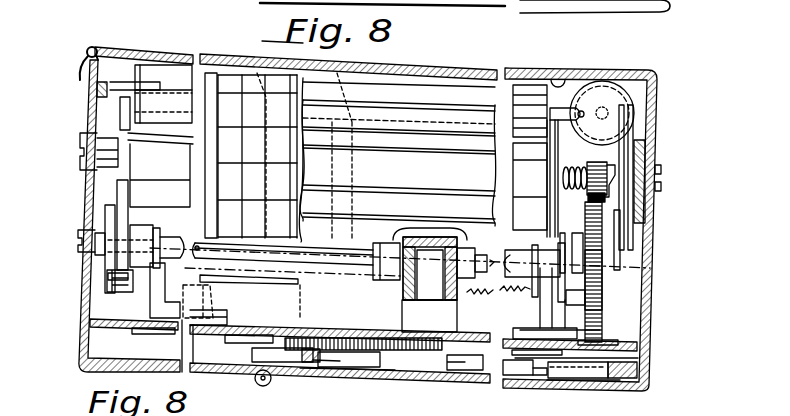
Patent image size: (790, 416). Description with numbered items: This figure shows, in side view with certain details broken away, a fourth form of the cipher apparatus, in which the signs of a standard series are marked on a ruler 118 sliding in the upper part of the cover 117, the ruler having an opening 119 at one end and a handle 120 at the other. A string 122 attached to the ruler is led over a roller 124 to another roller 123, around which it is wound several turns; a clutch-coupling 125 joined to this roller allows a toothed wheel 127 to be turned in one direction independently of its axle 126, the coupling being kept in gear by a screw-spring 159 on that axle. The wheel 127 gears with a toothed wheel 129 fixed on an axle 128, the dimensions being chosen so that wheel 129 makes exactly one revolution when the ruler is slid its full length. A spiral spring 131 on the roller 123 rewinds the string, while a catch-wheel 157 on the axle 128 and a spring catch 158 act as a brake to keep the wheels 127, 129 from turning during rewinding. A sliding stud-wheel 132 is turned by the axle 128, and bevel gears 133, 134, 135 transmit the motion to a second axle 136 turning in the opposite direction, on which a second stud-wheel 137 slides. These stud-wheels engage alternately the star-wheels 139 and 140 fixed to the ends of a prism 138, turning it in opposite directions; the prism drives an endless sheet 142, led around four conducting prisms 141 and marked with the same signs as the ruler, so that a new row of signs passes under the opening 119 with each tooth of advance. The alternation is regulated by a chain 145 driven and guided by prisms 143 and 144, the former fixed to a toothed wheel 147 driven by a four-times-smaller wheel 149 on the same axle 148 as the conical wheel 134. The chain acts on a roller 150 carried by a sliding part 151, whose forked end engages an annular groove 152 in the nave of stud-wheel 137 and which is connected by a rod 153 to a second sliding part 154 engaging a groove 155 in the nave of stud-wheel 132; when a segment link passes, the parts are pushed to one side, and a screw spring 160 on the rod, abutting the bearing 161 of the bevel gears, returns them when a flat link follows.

The cover 117 is at (660, 80).
The ruler 118 is at (403, 70).
The opening 119 is at (580, 78).
The handle 120 is at (85, 58).
The string 122 is at (545, 77).
The roller 123 is at (635, 112).
The roller 124 is at (617, 98).
The clutch-coupling 125 is at (614, 168).
The axle 126 is at (582, 172).
The toothed wheel 127 is at (655, 190).
The axle 128 is at (620, 272).
The toothed wheel 129 is at (610, 228).
The spiral spring 131 is at (650, 127).
The stud-wheel 132 is at (600, 300).
The bevel gear 133 is at (455, 247).
The bevel gear 134 is at (426, 249).
The bevel gear 135 is at (398, 240).
The axle 136 is at (362, 284).
The stud-wheel 137 is at (117, 218).
The prism 138 is at (420, 148).
The star-wheel 139 is at (575, 127).
The star-wheel 140 is at (125, 112).
The conducting prism 141 is at (148, 72).
The endless sheet 142 is at (237, 72).
The prism 143 is at (340, 362).
The prism 144 is at (595, 370).
The chain 145 is at (515, 368).
The toothed wheel 147 is at (300, 349).
The axle 148 is at (430, 320).
The toothed wheel 149 is at (443, 354).
The roller 150 is at (252, 352).
The sliding part 151 is at (222, 322).
The annular groove 152 is at (146, 238).
The rod 153 is at (503, 292).
The sliding part 154 is at (545, 330).
The groove 155 is at (545, 247).
The catch-wheel 157 is at (604, 262).
The spring catch 158 is at (606, 333).
The screw-spring 159 is at (584, 252).
The screw spring 160 is at (481, 293).
The bearing 161 is at (388, 247).